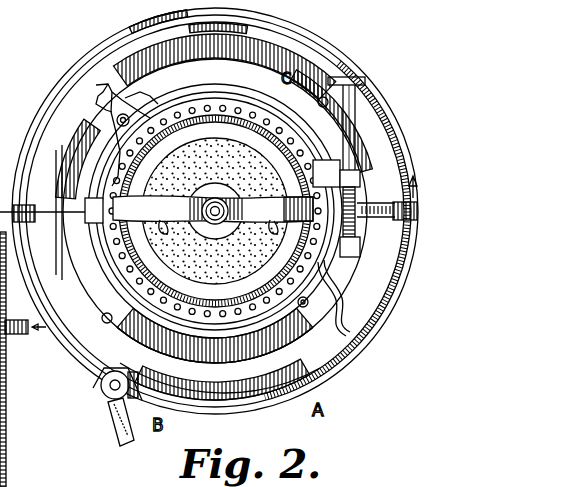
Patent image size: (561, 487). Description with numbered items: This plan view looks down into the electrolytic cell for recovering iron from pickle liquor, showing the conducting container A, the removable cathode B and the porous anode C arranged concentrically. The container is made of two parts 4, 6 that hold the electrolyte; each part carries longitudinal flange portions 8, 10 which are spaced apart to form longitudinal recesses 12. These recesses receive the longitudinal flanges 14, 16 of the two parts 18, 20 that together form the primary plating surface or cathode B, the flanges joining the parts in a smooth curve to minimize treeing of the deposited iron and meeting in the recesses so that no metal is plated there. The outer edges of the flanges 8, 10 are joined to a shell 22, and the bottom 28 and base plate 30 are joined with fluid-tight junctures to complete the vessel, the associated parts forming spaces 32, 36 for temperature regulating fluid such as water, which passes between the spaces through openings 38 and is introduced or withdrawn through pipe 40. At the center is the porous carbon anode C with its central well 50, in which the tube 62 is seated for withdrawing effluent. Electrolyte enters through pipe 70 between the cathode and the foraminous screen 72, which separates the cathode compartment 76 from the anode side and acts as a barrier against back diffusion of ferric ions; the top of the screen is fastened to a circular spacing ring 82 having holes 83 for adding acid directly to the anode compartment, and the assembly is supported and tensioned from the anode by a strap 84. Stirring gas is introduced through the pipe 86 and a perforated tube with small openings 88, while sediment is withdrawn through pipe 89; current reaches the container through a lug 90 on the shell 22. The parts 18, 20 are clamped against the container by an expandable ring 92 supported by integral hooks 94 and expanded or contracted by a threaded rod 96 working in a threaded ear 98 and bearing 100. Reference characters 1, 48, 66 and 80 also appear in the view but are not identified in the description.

The machine 1 is at (411, 177).
The container part 4 is at (226, 102).
The container part 6 is at (205, 340).
The longitudinal flange portion 8 is at (290, 330).
The longitudinal flange portion 10 is at (130, 88).
The longitudinal recess 12 is at (100, 95).
The longitudinal flange 14 is at (330, 362).
The longitudinal flange 16 is at (128, 100).
The cathode part 18 is at (207, 94).
The cathode part 20 is at (170, 330).
The shell 22 is at (240, 406).
The bottom 28 is at (92, 302).
The base plate 30 is at (136, 392).
The space 32 is at (262, 30).
The space 36 is at (275, 402).
The opening 38 is at (323, 97).
The pipe 40 is at (395, 226).
The hatched flange 48 is at (186, 404).
The central well 50 is at (235, 224).
The tube 62 is at (219, 198).
The nut 66 is at (6, 392).
The pipe 70 is at (148, 100).
The foraminous screen 72 is at (244, 137).
The cathode compartment 76 is at (240, 342).
The hub boss 80 is at (215, 212).
The circular spacing ring 82 is at (125, 243).
The hole 83 is at (280, 133).
The strap 84 is at (110, 222).
The pipe 86 is at (372, 203).
The small openings 88 is at (208, 300).
The pipe 89 is at (116, 428).
The lug 90 is at (104, 390).
The expandable ring 92 is at (110, 165).
The integral hooks 94 is at (90, 210).
The threaded rod 96 is at (356, 96).
The threaded ear 98 is at (360, 172).
The bearing 100 is at (385, 285).